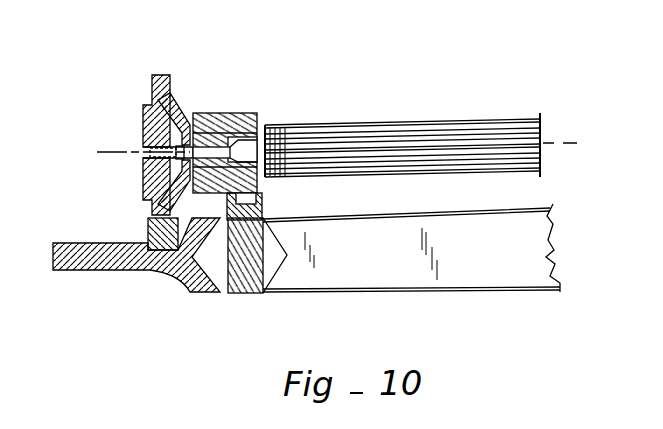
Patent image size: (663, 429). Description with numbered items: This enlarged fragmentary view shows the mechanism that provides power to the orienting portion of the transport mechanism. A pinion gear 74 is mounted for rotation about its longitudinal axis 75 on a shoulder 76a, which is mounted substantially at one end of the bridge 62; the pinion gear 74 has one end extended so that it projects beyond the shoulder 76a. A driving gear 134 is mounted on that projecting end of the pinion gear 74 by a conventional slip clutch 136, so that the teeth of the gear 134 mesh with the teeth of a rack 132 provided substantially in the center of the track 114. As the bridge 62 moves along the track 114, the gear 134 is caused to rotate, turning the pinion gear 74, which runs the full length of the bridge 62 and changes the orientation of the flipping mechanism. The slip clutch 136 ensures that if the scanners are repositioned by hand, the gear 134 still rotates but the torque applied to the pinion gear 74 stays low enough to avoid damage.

The gear 134 is at (150, 82).
The slip clutch 136 is at (180, 97).
The shoulder 76a is at (244, 113).
The pinion gear 74 is at (466, 121).
The longitudinal axis 75 is at (599, 110).
The bridge 62 is at (397, 294).
The rack 132 is at (148, 226).
The track 114 is at (100, 271).